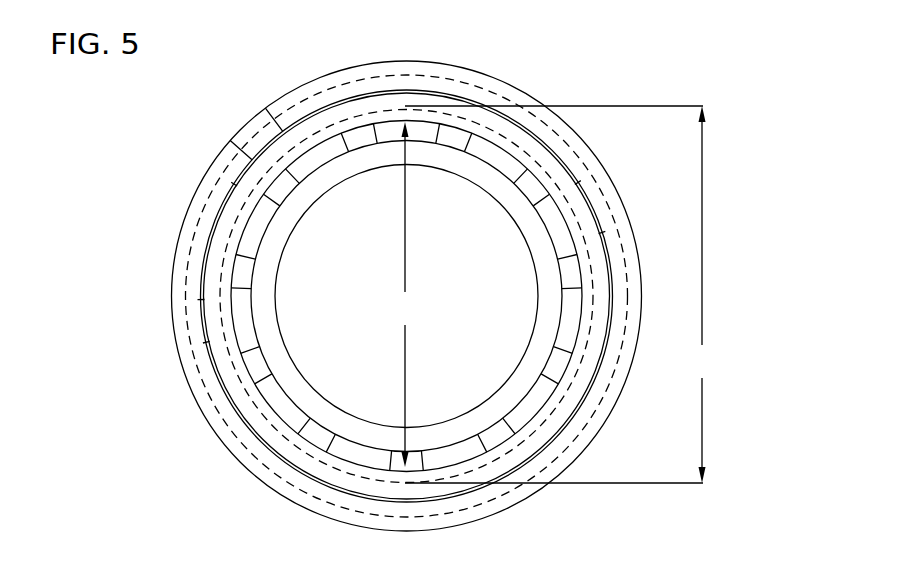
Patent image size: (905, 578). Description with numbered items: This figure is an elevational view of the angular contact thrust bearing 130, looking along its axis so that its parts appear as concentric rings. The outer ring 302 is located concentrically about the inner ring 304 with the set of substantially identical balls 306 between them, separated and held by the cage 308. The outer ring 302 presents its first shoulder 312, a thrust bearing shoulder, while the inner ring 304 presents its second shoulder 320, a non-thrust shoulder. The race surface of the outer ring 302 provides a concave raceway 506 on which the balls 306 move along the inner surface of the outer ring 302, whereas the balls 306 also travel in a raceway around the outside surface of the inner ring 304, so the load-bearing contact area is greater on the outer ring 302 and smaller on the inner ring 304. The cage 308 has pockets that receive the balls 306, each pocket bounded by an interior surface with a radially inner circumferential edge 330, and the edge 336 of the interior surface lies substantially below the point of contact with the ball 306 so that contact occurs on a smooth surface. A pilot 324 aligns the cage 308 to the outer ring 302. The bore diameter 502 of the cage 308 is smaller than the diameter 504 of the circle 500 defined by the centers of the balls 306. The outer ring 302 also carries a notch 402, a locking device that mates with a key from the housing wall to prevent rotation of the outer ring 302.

The angular contact thrust bearing 130 is at (106, 172).
The outer ring 302 is at (177, 313).
The inner ring 304 is at (518, 215).
The balls 306 is at (307, 163).
The cage 308 is at (313, 447).
The first shoulder 312 is at (192, 258).
The second shoulder 320 is at (445, 145).
The pilot 324 is at (217, 377).
The radially inner circumferential edge 330 is at (235, 320).
The edge of interior surface 336 is at (563, 312).
The notch 402 is at (248, 133).
The circle 500 is at (482, 467).
The bore diameter 502 is at (401, 294).
The diameter 504 is at (562, 294).
The concave raceway 506 is at (193, 233).